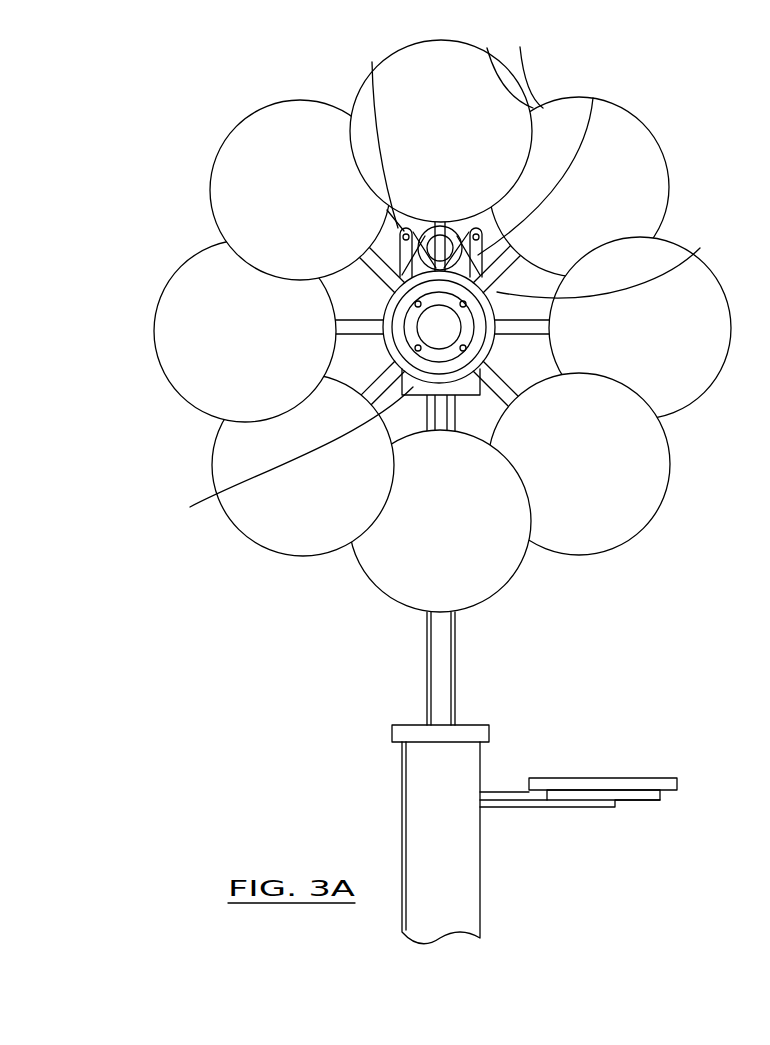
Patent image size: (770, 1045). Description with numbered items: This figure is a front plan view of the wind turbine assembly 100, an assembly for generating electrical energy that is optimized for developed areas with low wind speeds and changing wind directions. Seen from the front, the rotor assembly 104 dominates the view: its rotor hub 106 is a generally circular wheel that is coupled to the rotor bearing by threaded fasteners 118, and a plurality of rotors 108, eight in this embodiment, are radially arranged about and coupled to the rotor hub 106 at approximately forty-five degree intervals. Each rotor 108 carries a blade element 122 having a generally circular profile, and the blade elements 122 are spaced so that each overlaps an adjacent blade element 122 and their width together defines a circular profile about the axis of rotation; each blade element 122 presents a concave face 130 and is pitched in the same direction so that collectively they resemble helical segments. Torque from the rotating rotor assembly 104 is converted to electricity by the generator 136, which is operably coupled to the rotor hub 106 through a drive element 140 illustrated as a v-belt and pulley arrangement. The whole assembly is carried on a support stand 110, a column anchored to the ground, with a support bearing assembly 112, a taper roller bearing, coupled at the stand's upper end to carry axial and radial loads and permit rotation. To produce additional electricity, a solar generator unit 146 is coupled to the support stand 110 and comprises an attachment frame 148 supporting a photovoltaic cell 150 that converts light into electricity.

The wind turbine assembly 100 is at (217, 651).
The rotor assembly 104 is at (658, 84).
The rotor hub 106 is at (607, 262).
The rotors 108 is at (431, 331).
The support stand 110 is at (489, 733).
The support bearing assembly 112 is at (286, 461).
The threaded fasteners 118 is at (417, 345).
The blade element 122 is at (487, 48).
The concave face 130 is at (640, 180).
The generator 136 is at (377, 133).
The drive element 140 is at (544, 165).
The solar generator unit 146 is at (588, 799).
The attachment frame 148 is at (525, 808).
The photovoltaic cell 150 is at (637, 778).